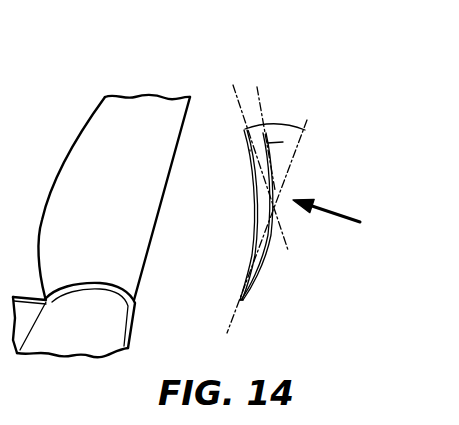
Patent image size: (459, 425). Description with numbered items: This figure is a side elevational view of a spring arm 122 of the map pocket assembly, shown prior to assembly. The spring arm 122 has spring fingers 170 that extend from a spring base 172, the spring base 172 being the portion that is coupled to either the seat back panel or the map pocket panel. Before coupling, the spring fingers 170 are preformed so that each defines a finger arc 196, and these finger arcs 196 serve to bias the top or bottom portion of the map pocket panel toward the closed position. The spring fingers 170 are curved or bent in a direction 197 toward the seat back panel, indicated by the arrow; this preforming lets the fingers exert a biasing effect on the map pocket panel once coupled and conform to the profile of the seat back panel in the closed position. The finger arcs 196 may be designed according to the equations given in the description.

The spring arm 122 is at (212, 65).
The finger arc 196 is at (333, 124).
The spring finger 170 is at (275, 176).
The spring base 172 is at (243, 298).
The direction 197 is at (340, 213).